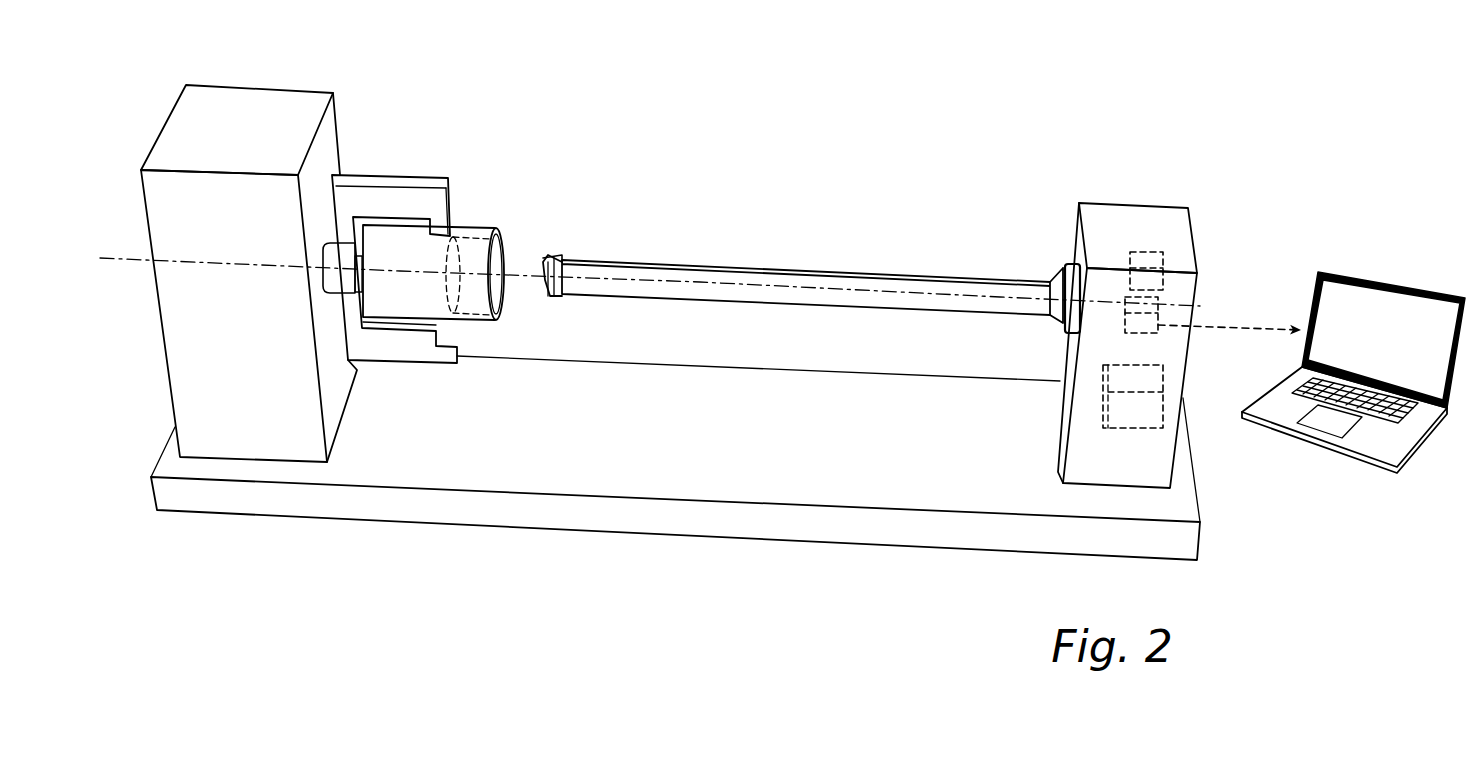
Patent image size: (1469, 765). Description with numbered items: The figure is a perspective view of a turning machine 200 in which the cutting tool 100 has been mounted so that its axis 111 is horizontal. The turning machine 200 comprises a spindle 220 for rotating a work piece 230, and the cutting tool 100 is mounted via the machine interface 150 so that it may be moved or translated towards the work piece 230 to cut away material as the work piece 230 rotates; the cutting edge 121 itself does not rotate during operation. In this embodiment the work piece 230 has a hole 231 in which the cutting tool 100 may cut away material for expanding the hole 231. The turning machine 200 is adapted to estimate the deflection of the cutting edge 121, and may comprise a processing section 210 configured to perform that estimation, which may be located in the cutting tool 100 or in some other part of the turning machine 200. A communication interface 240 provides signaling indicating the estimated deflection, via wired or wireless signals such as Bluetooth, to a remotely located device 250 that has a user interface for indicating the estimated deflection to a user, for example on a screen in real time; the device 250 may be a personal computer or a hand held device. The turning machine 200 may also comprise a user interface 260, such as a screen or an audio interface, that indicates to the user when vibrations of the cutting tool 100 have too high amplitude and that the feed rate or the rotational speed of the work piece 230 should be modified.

The cutting tool 100 is at (810, 231).
The axis 111 is at (521, 272).
The cutting edge 121 is at (543, 256).
The machine interface 150 is at (1068, 272).
The turning machine 200 is at (600, 565).
The processing section 210 is at (1152, 258).
The spindle 220 is at (396, 178).
The work piece 230 is at (468, 225).
The hole 231 is at (504, 258).
The communication interface 240 is at (1153, 318).
The remotely located device 250 is at (1384, 264).
The user interface 260 is at (1152, 410).